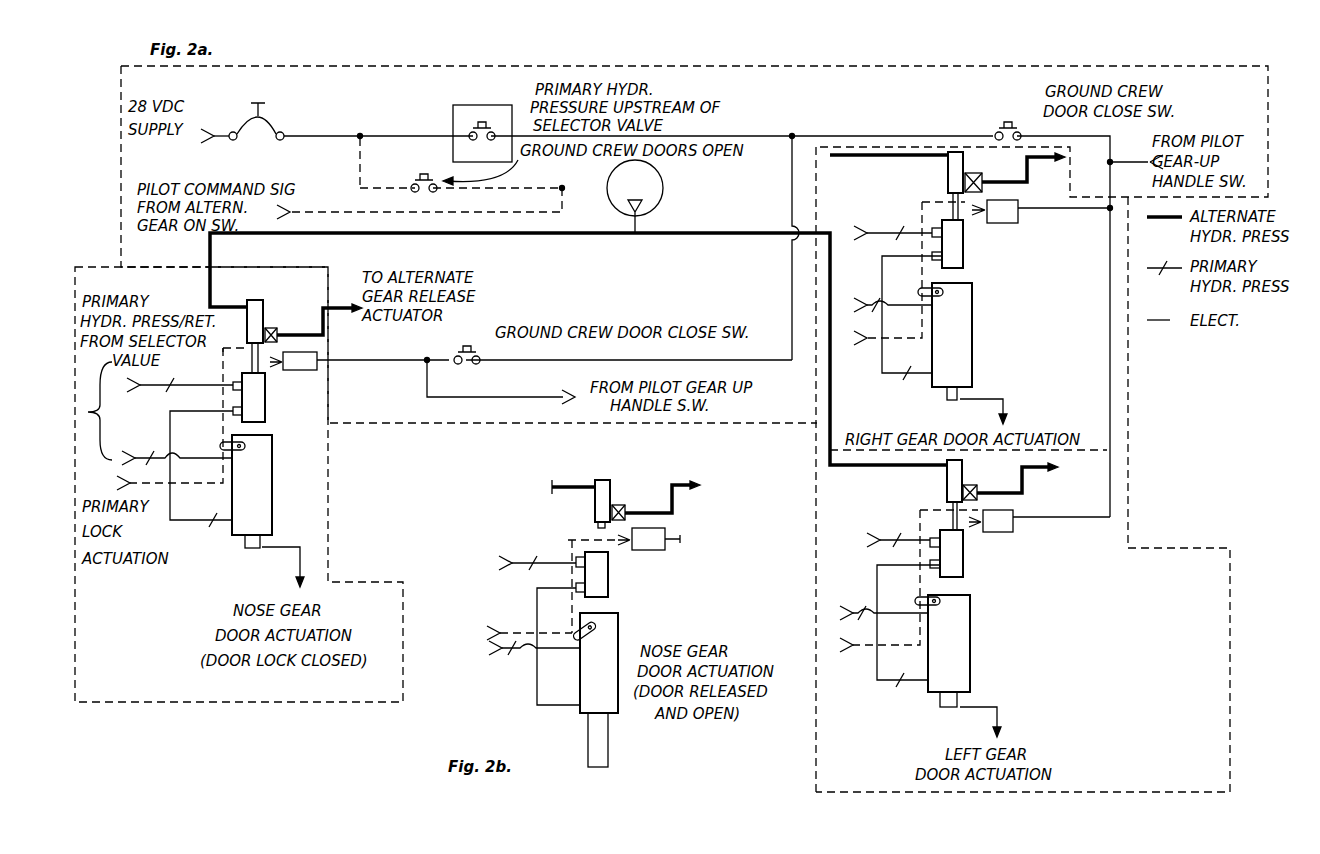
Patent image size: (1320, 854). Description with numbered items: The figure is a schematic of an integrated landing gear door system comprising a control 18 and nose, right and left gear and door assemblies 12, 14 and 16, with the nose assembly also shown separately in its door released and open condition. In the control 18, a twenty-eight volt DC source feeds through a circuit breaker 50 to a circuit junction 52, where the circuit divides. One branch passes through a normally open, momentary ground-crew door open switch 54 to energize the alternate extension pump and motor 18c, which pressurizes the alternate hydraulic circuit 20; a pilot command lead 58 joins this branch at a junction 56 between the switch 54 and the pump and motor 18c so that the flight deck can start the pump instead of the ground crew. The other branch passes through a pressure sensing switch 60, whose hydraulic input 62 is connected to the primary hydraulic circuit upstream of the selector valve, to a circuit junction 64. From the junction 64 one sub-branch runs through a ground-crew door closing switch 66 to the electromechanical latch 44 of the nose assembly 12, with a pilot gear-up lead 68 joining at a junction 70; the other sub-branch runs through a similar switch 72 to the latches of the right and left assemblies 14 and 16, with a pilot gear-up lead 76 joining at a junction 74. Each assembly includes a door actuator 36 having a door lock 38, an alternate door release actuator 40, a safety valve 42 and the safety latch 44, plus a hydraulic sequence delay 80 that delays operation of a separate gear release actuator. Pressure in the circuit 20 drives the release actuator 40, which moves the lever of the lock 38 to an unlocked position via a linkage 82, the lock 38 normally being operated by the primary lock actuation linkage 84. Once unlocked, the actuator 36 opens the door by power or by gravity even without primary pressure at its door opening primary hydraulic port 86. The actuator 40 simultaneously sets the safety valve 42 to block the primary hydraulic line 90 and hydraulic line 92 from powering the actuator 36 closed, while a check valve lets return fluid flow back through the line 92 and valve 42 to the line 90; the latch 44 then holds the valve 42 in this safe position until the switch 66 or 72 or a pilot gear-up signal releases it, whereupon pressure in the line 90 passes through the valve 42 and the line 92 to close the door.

In FIG. 2A, the control 18 is at (770, 63).
In FIG. 2A, the nose gear and door assembly 12 is at (93, 260).
In FIG. 2B, the nose gear and door assembly 12 is at (735, 548).
In FIG. 2A, the right main gear and door assembly 14 is at (1130, 384).
In FIG. 2A, the left main gear and door assembly 16 is at (1128, 530).
In FIG. 2A, the alternate extension pump and motor 18c is at (699, 196).
In FIG. 2A, the alternate hydraulic circuit 20 is at (212, 258).
In FIG. 2B, the alternate hydraulic circuit 20 is at (568, 486).
In FIG. 2A, the door actuator 36 is at (273, 478).
In FIG. 2B, the door actuator 36 is at (620, 620).
In FIG. 2A, the door lock 38 is at (222, 445).
In FIG. 2B, the door lock 38 is at (572, 628).
In FIG. 2A, the alternate door release actuator 40 is at (255, 300).
In FIG. 2B, the alternate door release actuator 40 is at (612, 488).
In FIG. 2A, the safety valve 42 is at (266, 420).
In FIG. 2B, the safety valve 42 is at (610, 592).
In FIG. 2A, the electromechanical latch 44 is at (296, 371).
In FIG. 2B, the electromechanical latch 44 is at (650, 550).
In FIG. 2A, the circuit breaker 50 is at (279, 122).
In FIG. 2A, the circuit junction 52 is at (360, 133).
In FIG. 2A, the ground-crew door open switch 54 is at (413, 178).
In FIG. 2A, the junction 56 is at (564, 190).
In FIG. 2A, the circuit lead 58 is at (308, 209).
In FIG. 2A, the pressure sensing switch 60 is at (452, 118).
In FIG. 2A, the hydraulic input 62 is at (476, 72).
In FIG. 2A, the circuit junction 64 is at (793, 134).
In FIG. 2A, the ground-crew door closing switch 66 is at (480, 352).
In FIG. 2A, the lead 68 is at (503, 397).
In FIG. 2A, the junction 70 is at (425, 362).
In FIG. 2A, the ground-crew door close switch 72 is at (993, 128).
In FIG. 2A, the junction 74 is at (1094, 193).
In FIG. 2A, the lead 76 is at (1114, 162).
In FIG. 2A, the hydraulic sequence delay 80 is at (277, 330).
In FIG. 2A, the linkage 82 is at (223, 350).
In FIG. 2B, the linkage 82 is at (569, 540).
In FIG. 2A, the primary lock actuation linkage 84 is at (182, 485).
In FIG. 2A, the door opening primary hydraulic port 86 is at (145, 456).
In FIG. 2B, the door opening primary hydraulic port 86 is at (508, 650).
In FIG. 2A, the primary hydraulic line 90 is at (148, 385).
In FIG. 2B, the primary hydraulic line 90 is at (525, 558).
In FIG. 2A, the hydraulic line 92 is at (174, 411).
In FIG. 2B, the hydraulic line 92 is at (537, 600).